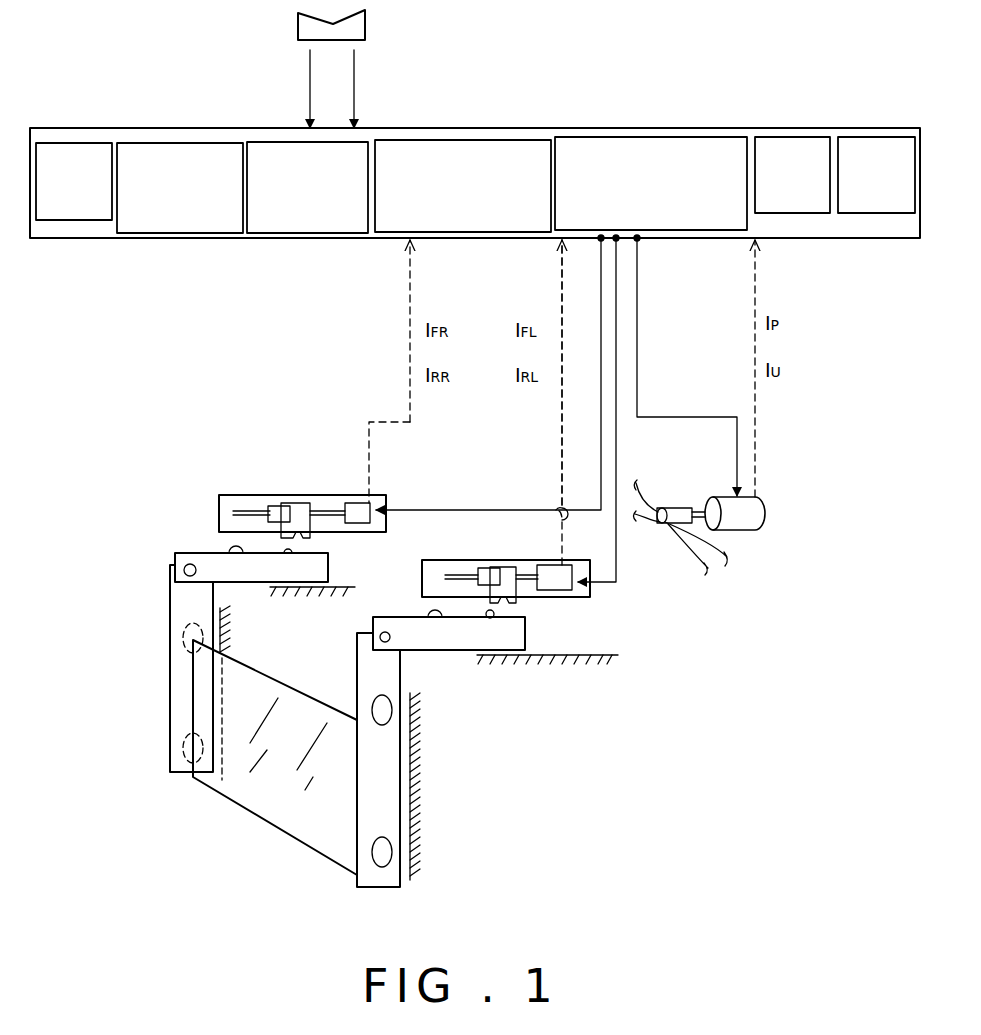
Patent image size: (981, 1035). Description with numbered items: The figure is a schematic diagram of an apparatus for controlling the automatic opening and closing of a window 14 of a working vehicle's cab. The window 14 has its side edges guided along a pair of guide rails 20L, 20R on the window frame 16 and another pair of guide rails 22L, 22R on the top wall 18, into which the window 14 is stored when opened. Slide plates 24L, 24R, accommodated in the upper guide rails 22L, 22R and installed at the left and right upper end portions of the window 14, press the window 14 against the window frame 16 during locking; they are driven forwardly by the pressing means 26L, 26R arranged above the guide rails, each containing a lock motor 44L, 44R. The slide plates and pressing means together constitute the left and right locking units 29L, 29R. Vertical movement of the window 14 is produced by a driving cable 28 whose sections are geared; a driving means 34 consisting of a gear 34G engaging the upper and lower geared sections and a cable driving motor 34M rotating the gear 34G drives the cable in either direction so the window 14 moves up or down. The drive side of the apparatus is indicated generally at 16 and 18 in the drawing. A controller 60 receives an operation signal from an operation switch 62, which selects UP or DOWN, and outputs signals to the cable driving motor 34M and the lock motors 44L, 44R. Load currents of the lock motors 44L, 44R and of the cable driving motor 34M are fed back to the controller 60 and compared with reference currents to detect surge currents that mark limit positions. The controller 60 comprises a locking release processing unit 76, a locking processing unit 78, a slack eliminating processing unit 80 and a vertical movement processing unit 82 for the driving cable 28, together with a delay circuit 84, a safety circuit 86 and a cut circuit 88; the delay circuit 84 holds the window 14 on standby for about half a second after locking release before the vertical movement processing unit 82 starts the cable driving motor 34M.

The window 14 is at (238, 797).
The window frame 16 is at (469, 760).
The top wall 18 is at (443, 540).
The guide rail 20R is at (222, 637).
The guide rail 20L is at (413, 782).
The guide rail 22R is at (307, 593).
The guide rail 22L is at (593, 660).
The slide plate 24R is at (188, 565).
The slide plate 24L is at (460, 650).
The pressing means 26R is at (286, 476).
The pressing means 26L is at (545, 601).
The driving cable 28 is at (692, 562).
The locking unit 29R is at (193, 405).
The locking unit 29L is at (647, 650).
The driving means 34 is at (756, 522).
The gear 34G is at (683, 508).
The cable driving motor 34M is at (767, 518).
The lock motor 44R is at (357, 503).
The lock motor 44L is at (552, 590).
The controller 60 is at (888, 128).
The operation switch 62 is at (365, 20).
The locking release processing unit 76 is at (178, 143).
The locking processing unit 78 is at (279, 142).
The slack eliminating processing unit 80 is at (458, 140).
The vertical movement processing unit 82 is at (640, 137).
The delay circuit 84 is at (93, 143).
The safety circuit 86 is at (778, 137).
The cut circuit 88 is at (855, 137).